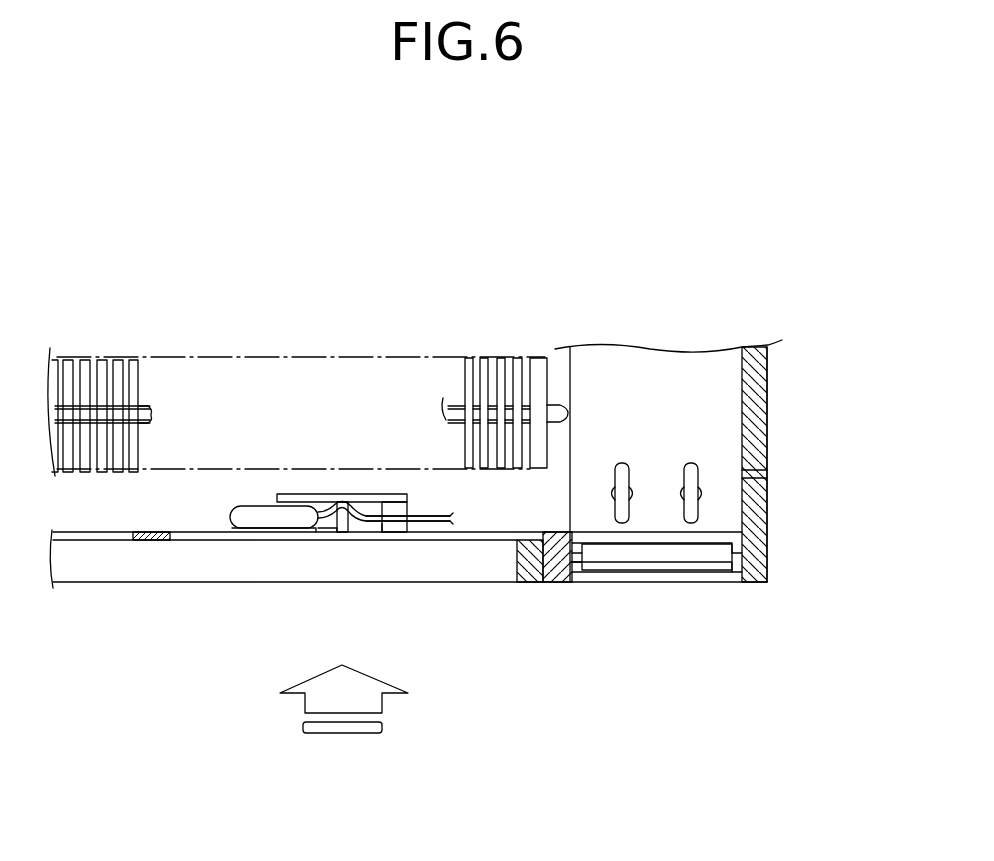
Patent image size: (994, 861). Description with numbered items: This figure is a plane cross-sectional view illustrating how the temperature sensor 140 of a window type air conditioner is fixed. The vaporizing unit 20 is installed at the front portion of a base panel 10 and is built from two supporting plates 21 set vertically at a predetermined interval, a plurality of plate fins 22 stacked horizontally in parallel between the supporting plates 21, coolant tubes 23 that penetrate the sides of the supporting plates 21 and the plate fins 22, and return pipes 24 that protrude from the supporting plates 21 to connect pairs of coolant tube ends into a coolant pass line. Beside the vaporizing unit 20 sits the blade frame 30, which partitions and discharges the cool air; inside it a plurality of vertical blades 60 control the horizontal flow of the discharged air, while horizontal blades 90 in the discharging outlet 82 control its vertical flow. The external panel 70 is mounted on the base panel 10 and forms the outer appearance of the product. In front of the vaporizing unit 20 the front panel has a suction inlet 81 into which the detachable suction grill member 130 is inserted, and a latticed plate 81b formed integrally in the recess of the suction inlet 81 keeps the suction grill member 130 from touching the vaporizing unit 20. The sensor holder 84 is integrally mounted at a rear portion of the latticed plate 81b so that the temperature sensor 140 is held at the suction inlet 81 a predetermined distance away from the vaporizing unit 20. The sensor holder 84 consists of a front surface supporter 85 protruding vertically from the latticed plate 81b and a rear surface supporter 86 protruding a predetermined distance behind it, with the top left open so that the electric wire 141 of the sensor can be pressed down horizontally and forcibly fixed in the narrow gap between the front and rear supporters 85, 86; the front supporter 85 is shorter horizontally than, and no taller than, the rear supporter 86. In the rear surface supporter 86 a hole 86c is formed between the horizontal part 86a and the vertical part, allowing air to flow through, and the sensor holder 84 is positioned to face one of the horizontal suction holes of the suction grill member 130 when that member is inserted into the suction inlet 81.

The base panel 10 is at (767, 551).
The vaporizing unit 20 is at (418, 358).
The supporting plates 21 is at (540, 357).
The plate fins 22 is at (85, 362).
The coolant tubes 23 is at (147, 405).
The return pipes 24 is at (566, 408).
The blade frame 30 is at (665, 375).
The vertical blades 60 is at (700, 482).
The external panel 70 is at (768, 365).
The suction inlet 81 is at (213, 542).
The latticed plate 81b is at (148, 543).
The discharging outlet 82 is at (636, 585).
The sensor holder 84 is at (365, 540).
The front surface supporter 85 is at (330, 538).
The rear surface supporter 86 is at (335, 498).
The horizontal part 86a is at (388, 538).
The hole 86c is at (392, 496).
The horizontal blades 90 is at (697, 575).
The suction grill member 130 is at (527, 583).
The temperature sensor 140 is at (258, 505).
The electric wire 141 is at (428, 503).